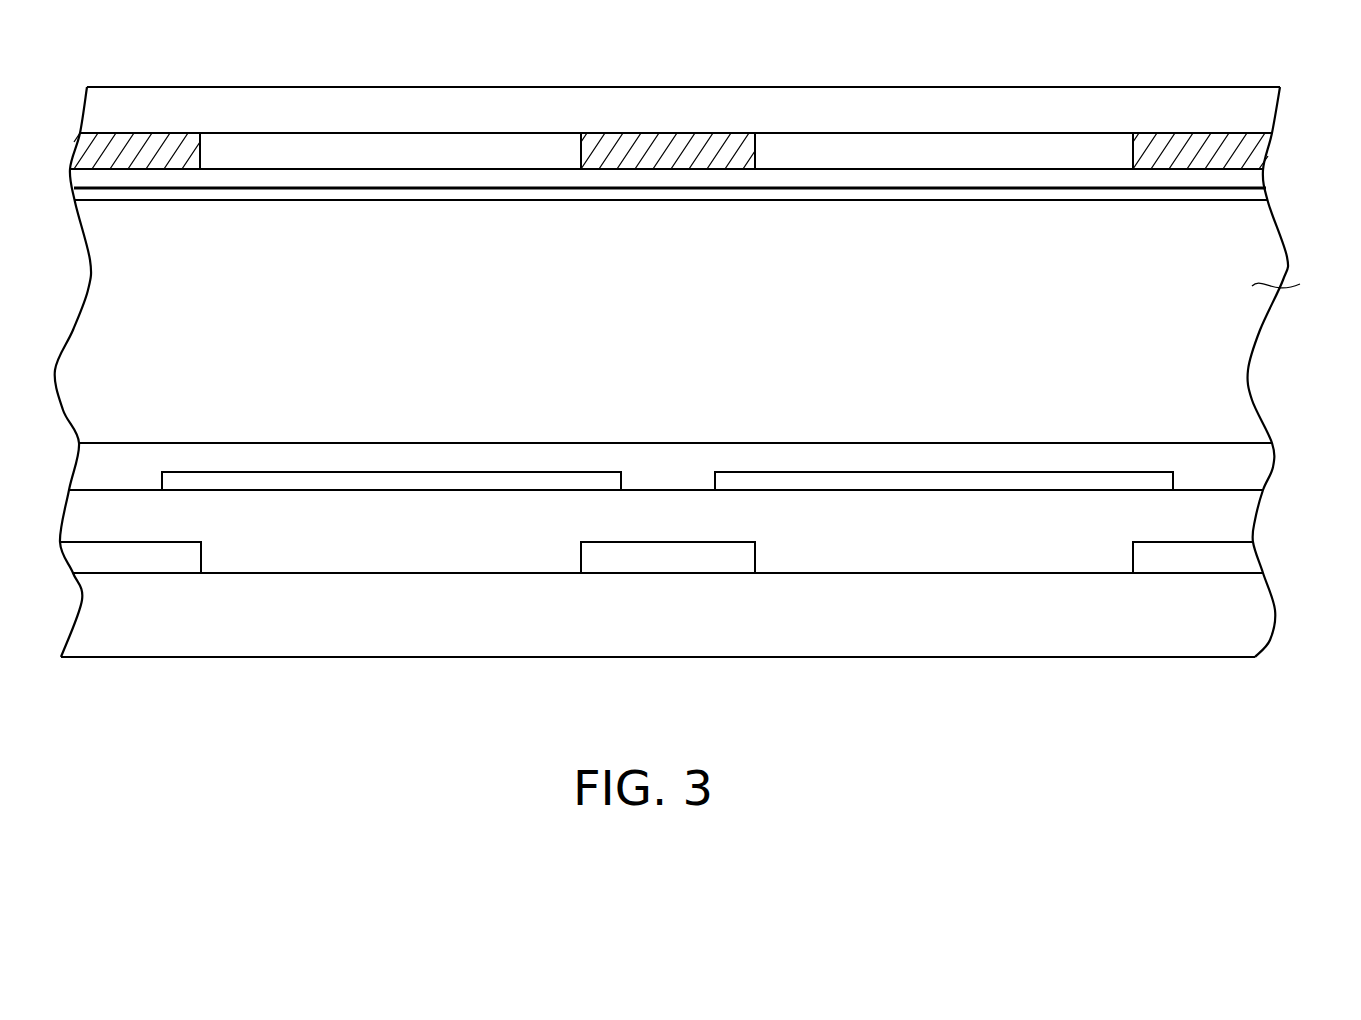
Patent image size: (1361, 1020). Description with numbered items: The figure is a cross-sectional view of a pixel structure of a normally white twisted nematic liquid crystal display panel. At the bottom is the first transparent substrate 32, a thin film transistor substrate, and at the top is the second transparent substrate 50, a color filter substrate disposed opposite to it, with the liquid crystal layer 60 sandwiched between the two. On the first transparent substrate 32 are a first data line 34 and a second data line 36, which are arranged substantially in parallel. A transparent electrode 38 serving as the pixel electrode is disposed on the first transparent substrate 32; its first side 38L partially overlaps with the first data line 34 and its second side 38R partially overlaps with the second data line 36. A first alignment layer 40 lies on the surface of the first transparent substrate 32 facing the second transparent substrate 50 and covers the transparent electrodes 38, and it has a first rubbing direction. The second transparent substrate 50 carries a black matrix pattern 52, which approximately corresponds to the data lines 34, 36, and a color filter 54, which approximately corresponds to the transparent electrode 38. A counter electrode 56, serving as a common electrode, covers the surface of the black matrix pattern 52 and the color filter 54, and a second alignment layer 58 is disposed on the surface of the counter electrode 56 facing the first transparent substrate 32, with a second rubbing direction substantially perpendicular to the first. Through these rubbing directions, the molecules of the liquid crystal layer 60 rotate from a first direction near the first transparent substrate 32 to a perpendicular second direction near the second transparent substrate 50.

The first transparent substrate 32 is at (677, 627).
The first data line 34 is at (727, 552).
The second data line 36 is at (1220, 550).
The transparent electrode 38 is at (970, 484).
The first side 38L is at (747, 470).
The second side 38R is at (1130, 470).
The first alignment layer 40 is at (1247, 466).
The second transparent substrate 50 is at (675, 122).
The black matrix pattern 52 is at (154, 164).
The color filter 54 is at (399, 164).
The counter electrode 56 is at (1247, 180).
The second alignment layer 58 is at (1250, 195).
The liquid crystal layer 60 is at (1295, 284).